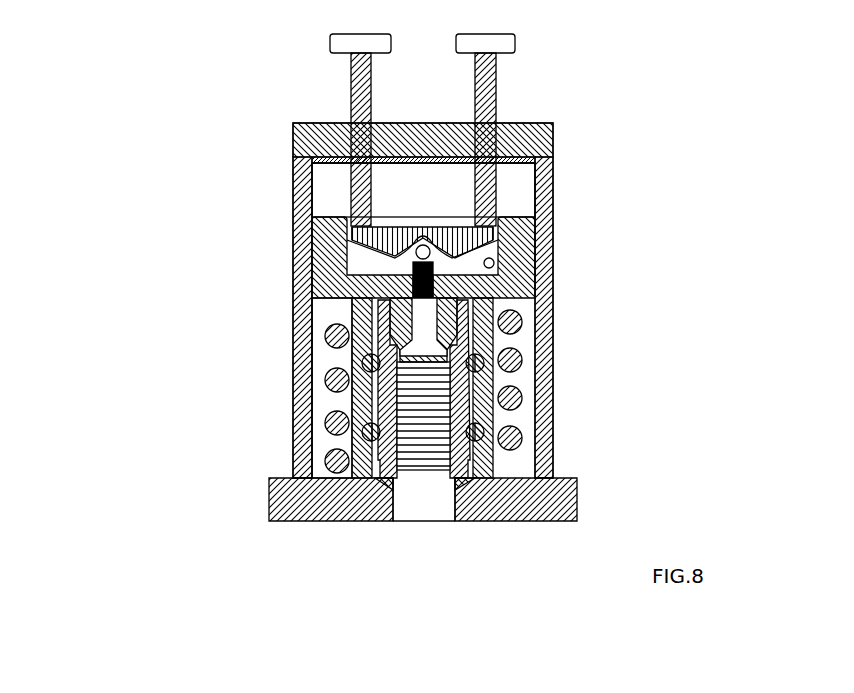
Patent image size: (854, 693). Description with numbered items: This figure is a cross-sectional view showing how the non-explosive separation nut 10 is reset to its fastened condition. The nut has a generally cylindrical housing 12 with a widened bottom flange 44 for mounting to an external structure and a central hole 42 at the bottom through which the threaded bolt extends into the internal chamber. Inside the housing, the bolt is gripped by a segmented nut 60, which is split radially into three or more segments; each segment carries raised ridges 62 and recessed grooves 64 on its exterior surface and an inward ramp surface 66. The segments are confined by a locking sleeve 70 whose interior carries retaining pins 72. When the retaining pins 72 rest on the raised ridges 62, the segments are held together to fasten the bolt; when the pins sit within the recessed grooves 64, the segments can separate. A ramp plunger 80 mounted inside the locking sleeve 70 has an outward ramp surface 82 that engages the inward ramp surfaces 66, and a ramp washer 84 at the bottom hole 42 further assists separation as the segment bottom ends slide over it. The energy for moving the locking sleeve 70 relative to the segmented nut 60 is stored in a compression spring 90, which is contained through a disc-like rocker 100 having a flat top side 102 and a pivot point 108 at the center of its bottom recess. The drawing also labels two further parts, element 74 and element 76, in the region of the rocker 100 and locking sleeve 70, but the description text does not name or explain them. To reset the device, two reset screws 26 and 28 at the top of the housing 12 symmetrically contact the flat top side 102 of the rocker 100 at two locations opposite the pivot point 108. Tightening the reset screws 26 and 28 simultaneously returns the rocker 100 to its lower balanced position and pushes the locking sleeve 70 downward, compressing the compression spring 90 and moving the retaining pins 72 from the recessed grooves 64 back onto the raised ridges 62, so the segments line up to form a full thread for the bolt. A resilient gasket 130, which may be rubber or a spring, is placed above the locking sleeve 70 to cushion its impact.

The non-explosive separation nut 10 is at (137, 158).
The housing 12 is at (553, 167).
The reset screw 26 is at (348, 105).
The reset screw 28 is at (505, 88).
The central hole 42 is at (395, 521).
The bottom flange 44 is at (555, 478).
The segmented nut 60 is at (300, 290).
The raised ridges 62 is at (325, 380).
The recessed grooves 64 is at (325, 420).
The inward ramp surfaces 66 is at (360, 330).
The locking sleeve 70 is at (492, 356).
The retaining pins 72 is at (482, 400).
The seat block 74 is at (400, 262).
The piston plate 76 is at (500, 228).
The ramp plunger 80 is at (413, 270).
The outward ramp surface 82 is at (445, 322).
The ramp washer 84 is at (440, 521).
The compression spring 90 is at (482, 432).
The rocker 100 is at (352, 232).
The flat top side 102 is at (462, 228).
The pivot point 108 is at (392, 240).
The resilient gasket 130 is at (545, 182).